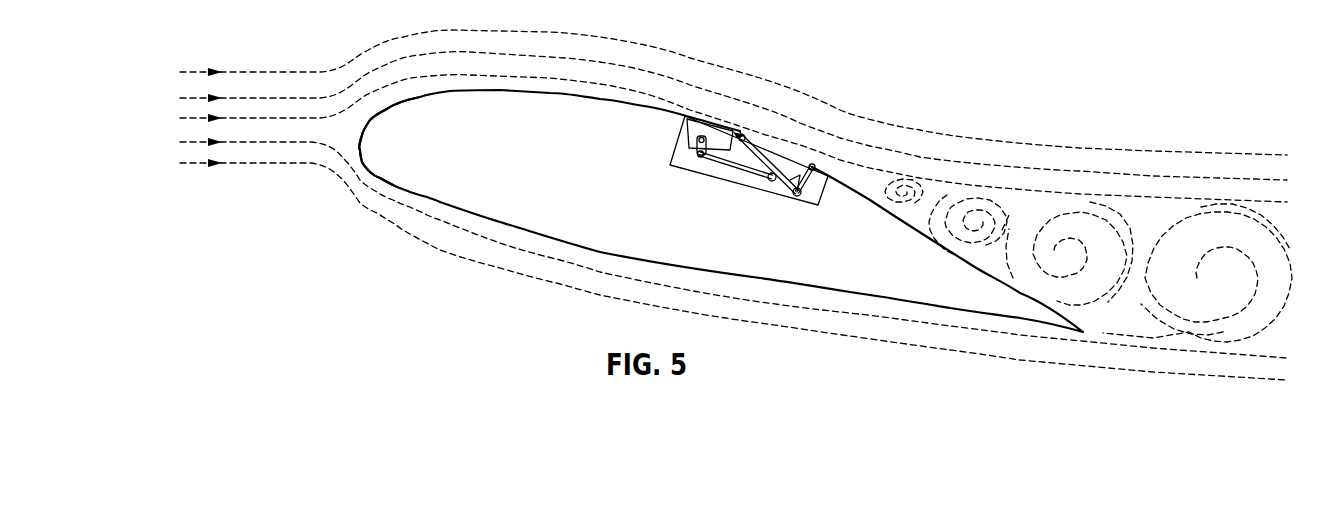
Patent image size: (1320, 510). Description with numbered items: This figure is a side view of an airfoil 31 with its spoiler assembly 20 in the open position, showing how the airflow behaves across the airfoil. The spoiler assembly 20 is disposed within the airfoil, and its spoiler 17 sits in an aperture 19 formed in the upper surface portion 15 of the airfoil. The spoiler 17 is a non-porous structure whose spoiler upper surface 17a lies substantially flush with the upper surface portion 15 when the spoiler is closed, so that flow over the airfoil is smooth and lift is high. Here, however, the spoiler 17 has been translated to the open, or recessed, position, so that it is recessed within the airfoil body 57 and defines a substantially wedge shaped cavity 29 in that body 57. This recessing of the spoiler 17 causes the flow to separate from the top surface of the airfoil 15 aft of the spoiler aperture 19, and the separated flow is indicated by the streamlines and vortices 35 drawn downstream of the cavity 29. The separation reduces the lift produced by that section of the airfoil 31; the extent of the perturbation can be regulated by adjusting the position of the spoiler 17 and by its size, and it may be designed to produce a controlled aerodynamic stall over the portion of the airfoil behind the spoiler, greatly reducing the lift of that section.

The upper surface portion 15 is at (442, 90).
The airfoil body 57 is at (397, 110).
The airfoil body 31 is at (551, 181).
The spoiler assembly 20 is at (678, 131).
The aperture 19 is at (765, 143).
The spoiler 17 is at (758, 163).
The spoiler upper surface 17a is at (800, 172).
The wedge shaped cavity 29 is at (803, 174).
The flow streamline 35 is at (840, 140).